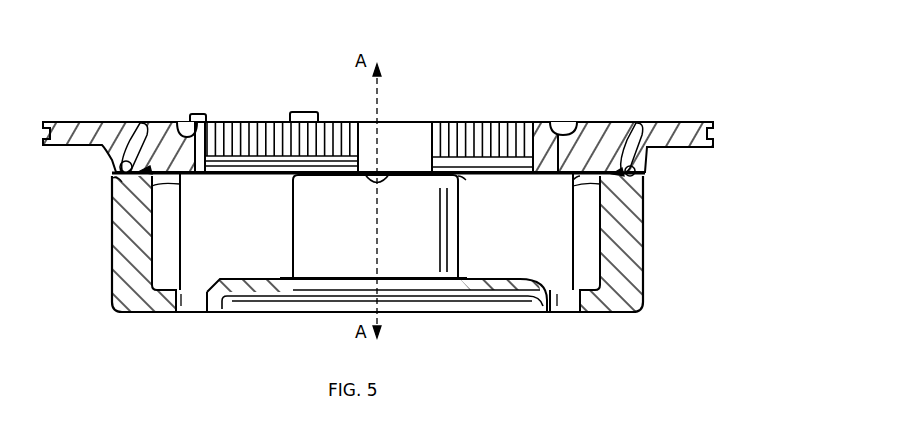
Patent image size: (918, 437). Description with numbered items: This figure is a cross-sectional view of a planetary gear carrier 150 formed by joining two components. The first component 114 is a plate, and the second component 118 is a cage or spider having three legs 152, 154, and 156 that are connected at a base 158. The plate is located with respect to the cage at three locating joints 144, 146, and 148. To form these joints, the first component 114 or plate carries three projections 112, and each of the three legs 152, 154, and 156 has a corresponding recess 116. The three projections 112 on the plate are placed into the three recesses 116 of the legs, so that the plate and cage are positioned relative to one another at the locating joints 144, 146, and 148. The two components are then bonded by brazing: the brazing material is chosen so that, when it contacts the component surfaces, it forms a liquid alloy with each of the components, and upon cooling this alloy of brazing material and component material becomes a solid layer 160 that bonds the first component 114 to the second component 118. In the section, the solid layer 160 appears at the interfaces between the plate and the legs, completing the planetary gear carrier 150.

The projection 112 is at (112, 162).
The first component 114 is at (602, 128).
The recess 116 is at (152, 191).
The second component 118 is at (635, 282).
The locating joint 144 is at (142, 165).
The locating joint 146 is at (392, 164).
The locating joint 148 is at (658, 170).
The planetary gear carrier 150 is at (726, 108).
The leg 152 is at (150, 253).
The leg 154 is at (433, 243).
The leg 156 is at (637, 222).
The base 158 is at (543, 304).
The solid layer 160 is at (112, 178).